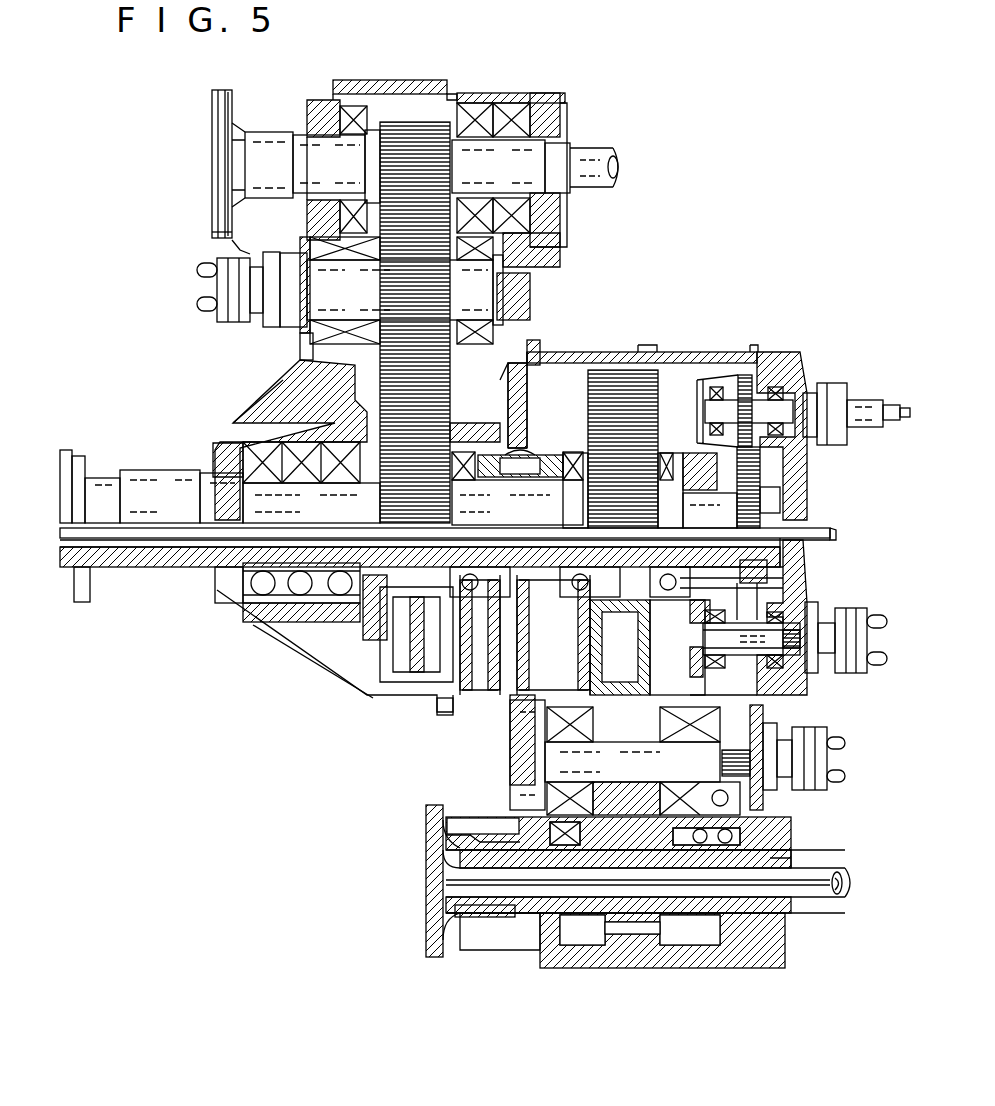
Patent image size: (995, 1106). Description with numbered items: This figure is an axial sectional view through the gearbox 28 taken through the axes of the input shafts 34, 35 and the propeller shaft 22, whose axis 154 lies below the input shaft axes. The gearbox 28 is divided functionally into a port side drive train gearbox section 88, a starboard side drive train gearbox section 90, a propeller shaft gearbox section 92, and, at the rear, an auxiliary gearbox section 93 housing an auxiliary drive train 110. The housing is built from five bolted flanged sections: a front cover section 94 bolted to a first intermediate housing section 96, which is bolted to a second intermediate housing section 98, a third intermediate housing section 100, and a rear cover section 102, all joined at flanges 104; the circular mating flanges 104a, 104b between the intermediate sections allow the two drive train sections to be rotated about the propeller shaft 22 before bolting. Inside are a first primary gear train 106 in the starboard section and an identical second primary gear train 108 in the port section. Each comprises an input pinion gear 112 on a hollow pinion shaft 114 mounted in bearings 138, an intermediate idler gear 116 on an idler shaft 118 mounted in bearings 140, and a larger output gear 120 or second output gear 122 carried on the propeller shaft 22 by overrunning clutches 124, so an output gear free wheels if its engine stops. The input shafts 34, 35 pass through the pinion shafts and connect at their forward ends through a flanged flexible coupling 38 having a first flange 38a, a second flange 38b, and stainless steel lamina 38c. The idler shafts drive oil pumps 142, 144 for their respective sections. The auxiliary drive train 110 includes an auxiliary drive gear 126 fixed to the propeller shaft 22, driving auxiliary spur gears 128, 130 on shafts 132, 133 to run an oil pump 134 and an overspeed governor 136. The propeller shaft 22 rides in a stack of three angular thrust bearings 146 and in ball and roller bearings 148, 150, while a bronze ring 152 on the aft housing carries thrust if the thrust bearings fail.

The propeller shaft 22 is at (165, 474).
The gearbox 28 is at (622, 94).
The input shaft 34 is at (613, 148).
The input shaft 35 is at (818, 910).
The flanged flexible coupling 38 is at (212, 88).
The first flange 38a is at (214, 234).
The second flange 38b is at (238, 248).
The stainless steel lamina 38c is at (226, 90).
The port side drive train gearbox section 88 is at (717, 1004).
The starboard side drive train gearbox section 90 is at (500, 64).
The propeller shaft gearbox section 92 is at (158, 580).
The auxiliary gearbox section 93 is at (794, 370).
The front cover section 94 is at (367, 695).
The first intermediate housing section 96 is at (470, 700).
The second intermediate housing section 98 is at (628, 352).
The third intermediate housing section 100 is at (680, 352).
The rear cover section 102 is at (777, 352).
The flanges 104 is at (437, 712).
The mating flange 104a is at (520, 325).
The mating flange 104b is at (530, 348).
The first primary gear train 106 is at (412, 120).
The second primary gear train 108 is at (605, 935).
The auxiliary drive train 110 is at (765, 472).
The input pinion gear 112 is at (452, 182).
The hollow pinion shaft 114 is at (300, 133).
The intermediate idler gear 116 is at (380, 302).
The idler shaft 118 is at (300, 257).
The output gear 120 is at (380, 402).
The second output gear 122 is at (588, 392).
The overrunning clutches 124 is at (355, 620).
The auxiliary drive gear 126 is at (780, 500).
The auxiliary spur gear 128 is at (744, 375).
The auxiliary spur gear 130 is at (790, 667).
The shaft 132 is at (780, 630).
The shaft 133 is at (808, 395).
The oil pump 134 is at (845, 610).
The overspeed governor 136 is at (883, 428).
The bearings 138 is at (500, 105).
The bearings 140 is at (300, 350).
The oil pump 142 is at (218, 320).
The oil pump 144 is at (832, 762).
The angular thrust bearings 146 is at (265, 604).
The ball and roller bearings 148 is at (575, 563).
The ball and roller bearings 150 is at (693, 495).
The bronze ring 152 is at (760, 587).
The axis 154 is at (62, 524).